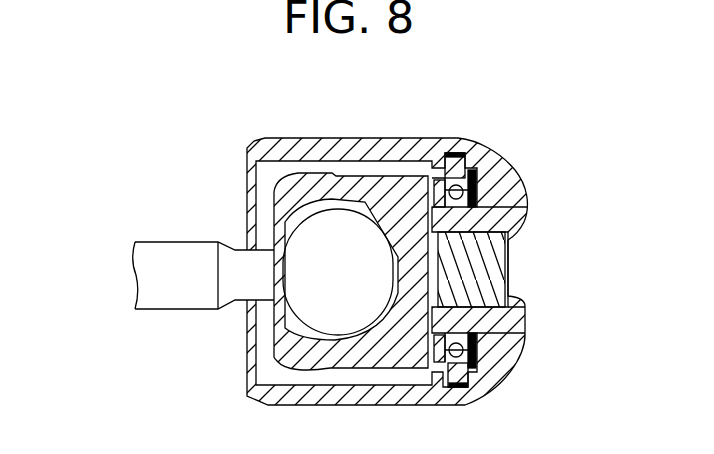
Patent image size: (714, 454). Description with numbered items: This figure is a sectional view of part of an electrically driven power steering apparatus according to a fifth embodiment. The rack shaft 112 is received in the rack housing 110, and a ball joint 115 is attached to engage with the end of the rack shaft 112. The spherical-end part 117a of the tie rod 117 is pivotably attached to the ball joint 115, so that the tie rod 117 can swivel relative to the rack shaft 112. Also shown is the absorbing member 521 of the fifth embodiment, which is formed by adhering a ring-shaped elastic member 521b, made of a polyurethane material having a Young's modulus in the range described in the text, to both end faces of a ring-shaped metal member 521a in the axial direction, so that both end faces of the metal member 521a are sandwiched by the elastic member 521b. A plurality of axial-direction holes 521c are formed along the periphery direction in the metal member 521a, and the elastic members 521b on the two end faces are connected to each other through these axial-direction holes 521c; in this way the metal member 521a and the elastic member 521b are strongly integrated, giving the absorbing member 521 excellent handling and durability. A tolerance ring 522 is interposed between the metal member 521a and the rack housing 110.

The rack housing 110 is at (287, 150).
The rack shaft 112 is at (520, 197).
The ball joint 115 is at (290, 198).
The tie rod 117 is at (150, 278).
The spherical-end part 117a is at (320, 302).
The absorbing member 521 is at (532, 167).
The metal member 521a is at (485, 172).
The elastic member 521b is at (437, 157).
The axial-direction holes 521c is at (505, 236).
The tolerance ring 522 is at (482, 386).